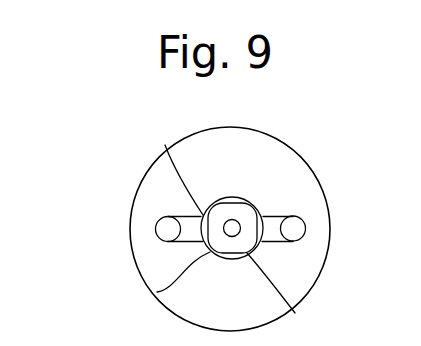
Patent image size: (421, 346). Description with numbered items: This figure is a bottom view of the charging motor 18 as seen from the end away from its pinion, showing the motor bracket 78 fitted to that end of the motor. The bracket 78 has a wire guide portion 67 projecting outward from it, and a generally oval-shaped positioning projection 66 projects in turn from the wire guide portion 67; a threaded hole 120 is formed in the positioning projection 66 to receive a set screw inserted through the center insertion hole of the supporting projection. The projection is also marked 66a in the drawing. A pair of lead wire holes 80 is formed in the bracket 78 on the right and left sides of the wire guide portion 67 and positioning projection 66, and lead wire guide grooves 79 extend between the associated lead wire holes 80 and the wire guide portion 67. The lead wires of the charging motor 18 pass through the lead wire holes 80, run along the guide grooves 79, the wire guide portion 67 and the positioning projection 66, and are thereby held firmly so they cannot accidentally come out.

The charging motor 18 is at (318, 170).
The motor bracket 78 is at (305, 197).
The lead wire holes 80 is at (163, 232).
The lead wire guide grooves 79 is at (277, 242).
The threaded hole 120 is at (235, 221).
The positioning projection 66 is at (152, 295).
The spring arm 66a is at (168, 148).
The wire guide portion 67 is at (295, 313).